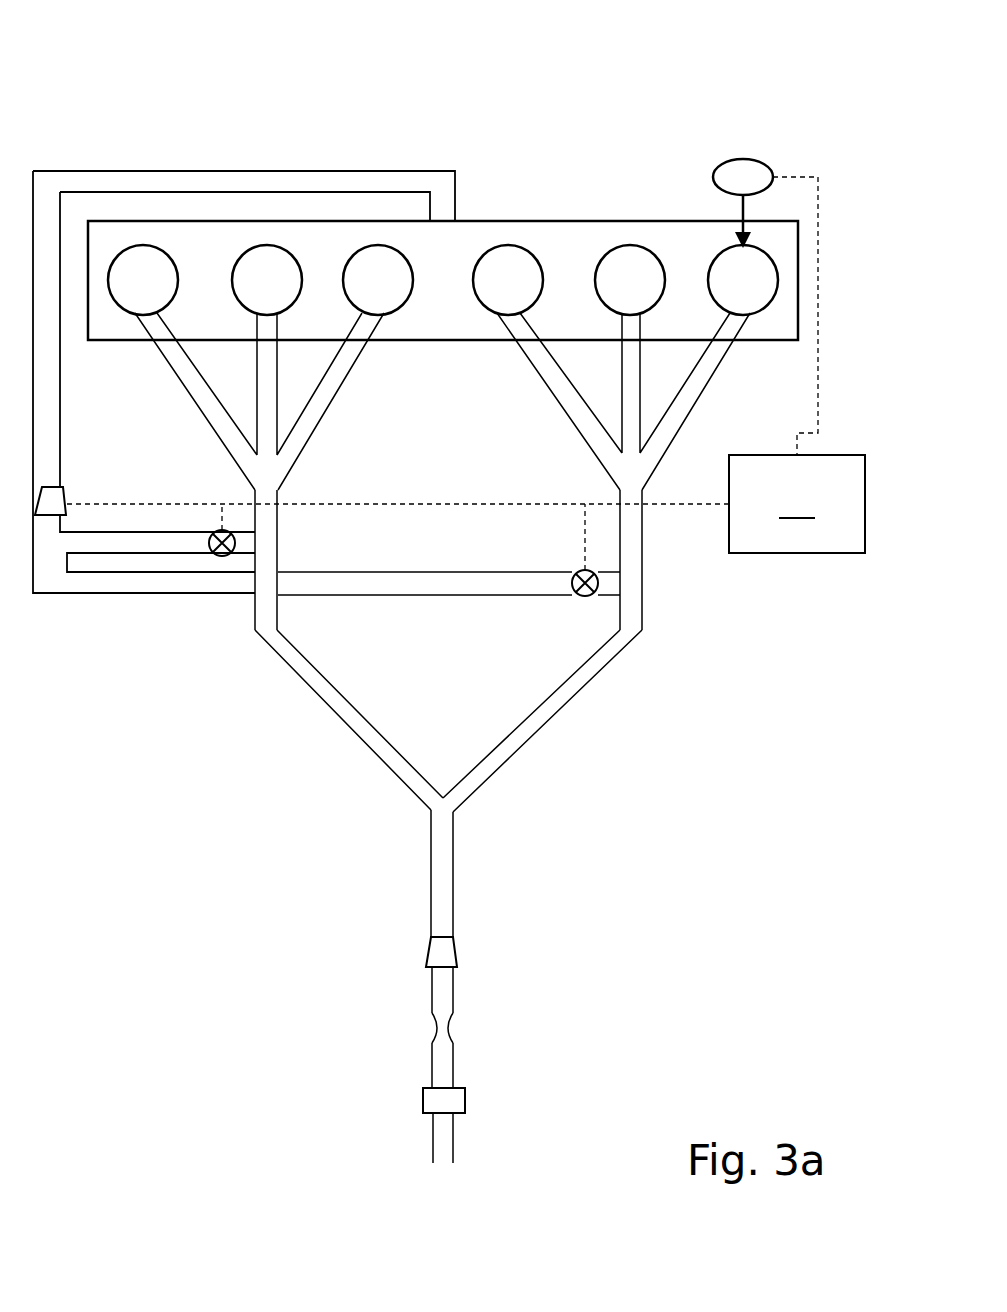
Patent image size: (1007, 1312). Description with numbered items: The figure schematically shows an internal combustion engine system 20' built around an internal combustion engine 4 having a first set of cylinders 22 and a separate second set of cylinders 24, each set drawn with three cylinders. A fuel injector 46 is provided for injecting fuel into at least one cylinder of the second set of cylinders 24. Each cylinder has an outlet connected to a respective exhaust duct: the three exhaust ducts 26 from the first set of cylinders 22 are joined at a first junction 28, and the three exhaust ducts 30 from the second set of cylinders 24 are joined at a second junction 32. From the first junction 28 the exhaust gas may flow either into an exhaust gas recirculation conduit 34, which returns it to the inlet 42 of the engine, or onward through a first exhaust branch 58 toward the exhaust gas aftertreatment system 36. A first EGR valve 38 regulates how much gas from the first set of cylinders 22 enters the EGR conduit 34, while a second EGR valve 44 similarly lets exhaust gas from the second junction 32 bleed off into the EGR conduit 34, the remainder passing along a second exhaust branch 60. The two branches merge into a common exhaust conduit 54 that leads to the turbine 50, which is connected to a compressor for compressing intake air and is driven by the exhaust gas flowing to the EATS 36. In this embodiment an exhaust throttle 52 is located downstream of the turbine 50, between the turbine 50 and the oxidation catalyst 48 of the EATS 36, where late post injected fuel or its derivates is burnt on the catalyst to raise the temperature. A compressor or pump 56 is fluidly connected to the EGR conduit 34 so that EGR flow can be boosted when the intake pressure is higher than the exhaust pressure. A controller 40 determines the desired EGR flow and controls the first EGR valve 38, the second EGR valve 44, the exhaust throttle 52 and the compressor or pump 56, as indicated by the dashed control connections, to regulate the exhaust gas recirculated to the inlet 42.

The internal combustion engine system 20' is at (116, 53).
The internal combustion engine 4 is at (557, 240).
The inlet 42 is at (443, 221).
The exhaust gas recirculation conduit 34 is at (48, 395).
The first set of cylinders 22 is at (340, 275).
The second set of cylinders 24 is at (535, 278).
The fuel injector 46 is at (760, 163).
The exhaust ducts 26 is at (222, 422).
The exhaust ducts 30 is at (692, 390).
The first junction 28 is at (268, 472).
The second junction 32 is at (630, 472).
The compressor or pump 56 is at (60, 490).
The first EGR valve 38 is at (222, 558).
The second EGR valve 44 is at (575, 572).
The controller 40 is at (797, 504).
The first exhaust branch 58 is at (385, 750).
The second exhaust branch 60 is at (548, 712).
The exhaust conduit 54 is at (440, 830).
The turbine 50 is at (443, 958).
The exhaust gas aftertreatment system 36 is at (576, 1010).
The exhaust throttle 52 is at (425, 1030).
The oxidation catalyst 48 is at (445, 1103).